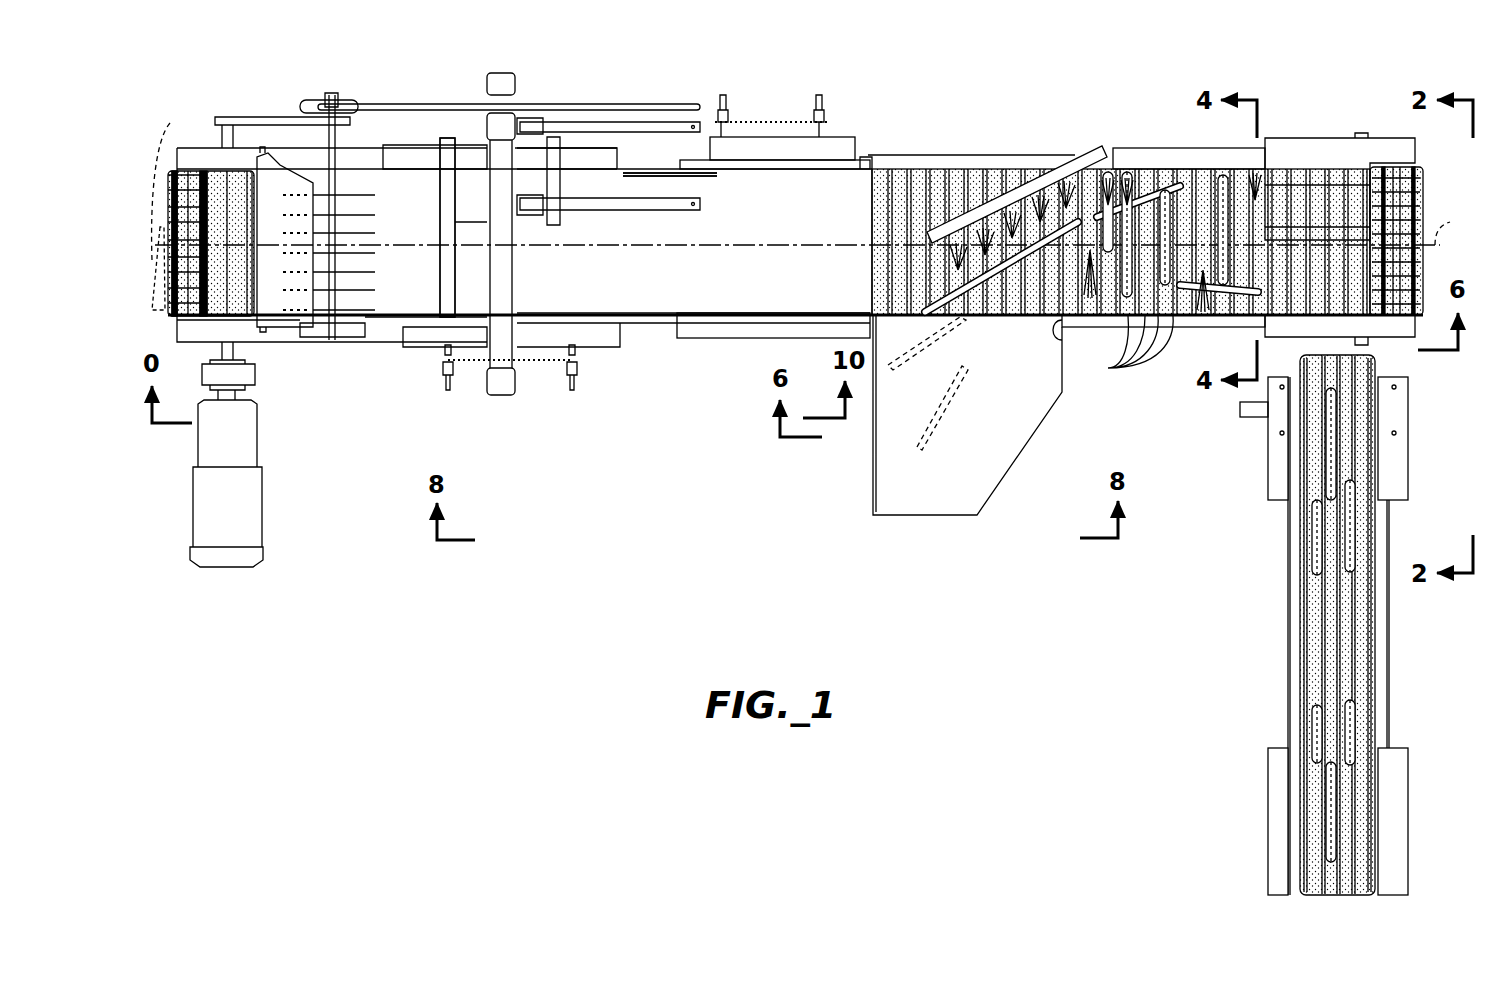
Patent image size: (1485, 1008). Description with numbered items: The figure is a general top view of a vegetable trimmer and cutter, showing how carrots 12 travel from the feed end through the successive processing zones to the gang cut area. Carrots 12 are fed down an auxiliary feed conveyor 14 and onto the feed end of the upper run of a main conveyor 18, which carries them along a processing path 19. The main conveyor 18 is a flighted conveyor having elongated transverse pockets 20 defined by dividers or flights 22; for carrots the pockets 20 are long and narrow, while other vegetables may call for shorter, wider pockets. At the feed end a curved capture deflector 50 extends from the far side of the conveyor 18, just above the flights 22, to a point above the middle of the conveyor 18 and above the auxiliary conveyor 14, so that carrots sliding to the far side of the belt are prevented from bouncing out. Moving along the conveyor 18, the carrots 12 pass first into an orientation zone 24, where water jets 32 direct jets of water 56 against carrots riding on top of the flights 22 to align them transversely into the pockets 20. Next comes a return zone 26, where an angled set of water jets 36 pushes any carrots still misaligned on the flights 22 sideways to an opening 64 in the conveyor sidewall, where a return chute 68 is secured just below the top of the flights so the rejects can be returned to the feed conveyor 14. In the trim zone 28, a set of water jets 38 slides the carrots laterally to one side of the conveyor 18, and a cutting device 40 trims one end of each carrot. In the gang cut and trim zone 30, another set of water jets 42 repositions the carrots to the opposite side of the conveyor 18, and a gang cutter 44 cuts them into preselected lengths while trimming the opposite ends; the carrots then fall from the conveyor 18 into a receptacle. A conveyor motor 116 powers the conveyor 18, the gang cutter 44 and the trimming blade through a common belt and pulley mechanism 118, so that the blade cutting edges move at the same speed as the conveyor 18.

The carrots 12 is at (1402, 682).
The auxiliary feed conveyor 14 is at (1286, 630).
The main conveyor 18 is at (920, 130).
The processing path 19 is at (816, 189).
The transverse pockets 20 is at (1246, 170).
The flights 22 is at (1123, 349).
The orientation zone 24 is at (1181, 100).
The return zone 26 is at (1036, 138).
The trim zone 28 is at (773, 99).
The gang cut and trim zone 30 is at (318, 96).
The water jets 32 is at (1143, 148).
The angled set of water jets 36 is at (997, 200).
The set of water jets 38 is at (758, 335).
The cutting device 40 is at (700, 177).
The set of water jets 42 is at (472, 160).
The gang cutter 44 is at (356, 287).
The curved capture deflector 50 is at (1338, 217).
The jets of water 56 is at (1122, 167).
The opening 64 is at (875, 332).
The return chute 68 is at (880, 493).
The conveyor motor 116 is at (258, 450).
The common belt and pulley mechanism 118 is at (583, 105).